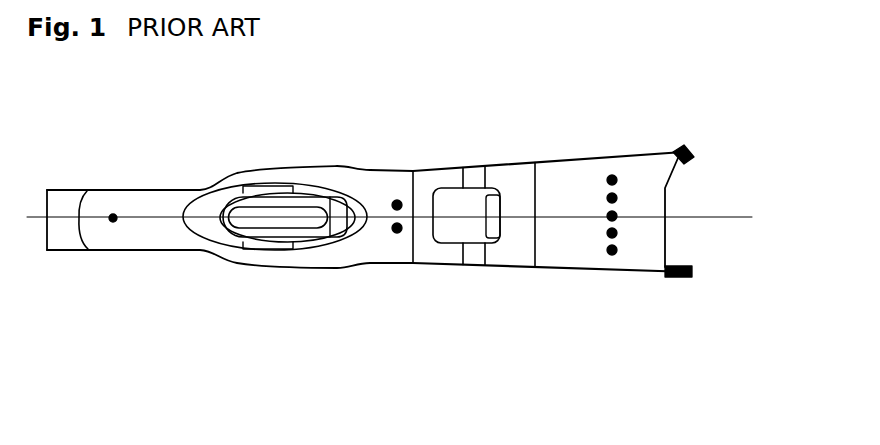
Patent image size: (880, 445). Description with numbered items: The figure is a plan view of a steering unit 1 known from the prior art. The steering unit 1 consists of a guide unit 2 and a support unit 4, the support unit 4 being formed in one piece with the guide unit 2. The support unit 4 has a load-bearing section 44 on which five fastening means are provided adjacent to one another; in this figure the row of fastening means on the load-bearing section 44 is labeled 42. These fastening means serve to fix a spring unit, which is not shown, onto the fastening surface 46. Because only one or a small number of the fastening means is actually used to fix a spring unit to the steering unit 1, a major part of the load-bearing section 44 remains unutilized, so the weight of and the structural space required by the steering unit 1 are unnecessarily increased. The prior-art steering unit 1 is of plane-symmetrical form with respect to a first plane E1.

The steering unit 1 is at (396, 239).
The guide unit 2 is at (333, 168).
The support unit 4 is at (705, 188).
The row of rivets / fastening points 42 is at (611, 176).
The load-bearing section 44 is at (683, 277).
The fastening surface 46 is at (639, 181).
The first plane E1 is at (728, 220).